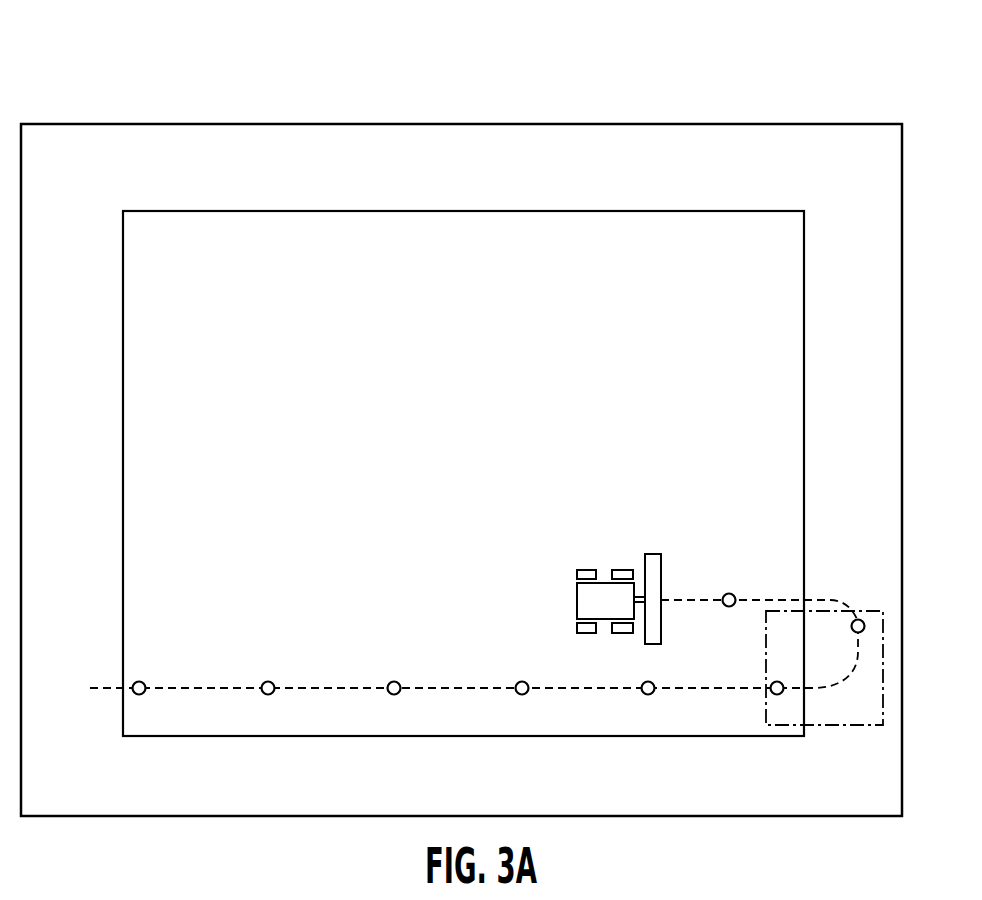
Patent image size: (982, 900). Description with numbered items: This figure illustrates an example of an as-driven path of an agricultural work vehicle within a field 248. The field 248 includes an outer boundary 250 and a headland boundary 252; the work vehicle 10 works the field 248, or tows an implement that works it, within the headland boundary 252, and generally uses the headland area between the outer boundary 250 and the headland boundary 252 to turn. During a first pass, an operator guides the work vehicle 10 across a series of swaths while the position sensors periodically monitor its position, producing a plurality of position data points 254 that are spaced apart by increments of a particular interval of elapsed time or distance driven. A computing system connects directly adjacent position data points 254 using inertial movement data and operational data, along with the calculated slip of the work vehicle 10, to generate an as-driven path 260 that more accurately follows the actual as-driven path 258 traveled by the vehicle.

The field 248 is at (176, 86).
The outer boundary 250 is at (765, 124).
The headland boundary 252 is at (565, 211).
The position data points 254 is at (268, 681).
The actual as-driven path 258 is at (486, 662).
The as-driven path 260 is at (345, 688).
The work vehicle 10 is at (617, 546).